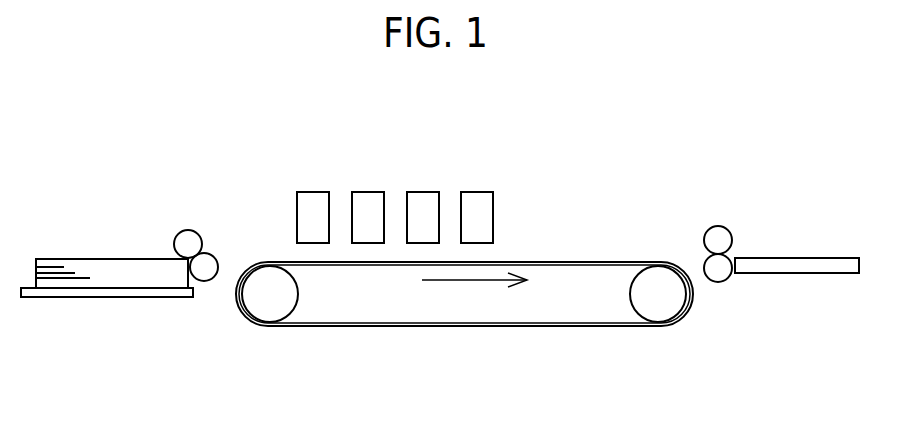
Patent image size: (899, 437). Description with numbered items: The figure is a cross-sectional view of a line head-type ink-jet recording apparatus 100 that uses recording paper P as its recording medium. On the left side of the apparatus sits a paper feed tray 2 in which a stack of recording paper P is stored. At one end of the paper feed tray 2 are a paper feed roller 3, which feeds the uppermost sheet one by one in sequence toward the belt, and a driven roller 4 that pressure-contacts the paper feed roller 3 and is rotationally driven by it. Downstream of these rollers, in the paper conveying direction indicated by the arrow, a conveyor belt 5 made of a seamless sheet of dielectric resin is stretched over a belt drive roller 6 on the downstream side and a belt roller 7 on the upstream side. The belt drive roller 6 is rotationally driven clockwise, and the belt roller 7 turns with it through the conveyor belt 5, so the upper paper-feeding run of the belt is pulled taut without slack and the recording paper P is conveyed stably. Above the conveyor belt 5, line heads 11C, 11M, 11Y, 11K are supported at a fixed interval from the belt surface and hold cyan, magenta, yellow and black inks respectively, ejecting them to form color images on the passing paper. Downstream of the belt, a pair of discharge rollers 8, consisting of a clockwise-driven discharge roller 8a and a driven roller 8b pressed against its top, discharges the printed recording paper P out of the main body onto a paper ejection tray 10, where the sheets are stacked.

The ink-jet recording apparatus 100 is at (237, 186).
The paper feed tray 2 is at (92, 297).
The recording paper P is at (108, 268).
The paper feed roller 3 is at (188, 242).
The driven roller 4 is at (205, 277).
The line head 11C is at (317, 200).
The line head 11M is at (370, 200).
The line head 11Y is at (425, 200).
The line head 11K is at (478, 200).
The conveyor belt 5 is at (450, 328).
The belt roller 7 is at (276, 308).
The belt drive roller 6 is at (660, 309).
The pair of discharge rollers 8 is at (685, 238).
The discharge roller 8a is at (718, 282).
The driven roller 8b is at (717, 237).
The paper ejection tray 10 is at (805, 274).